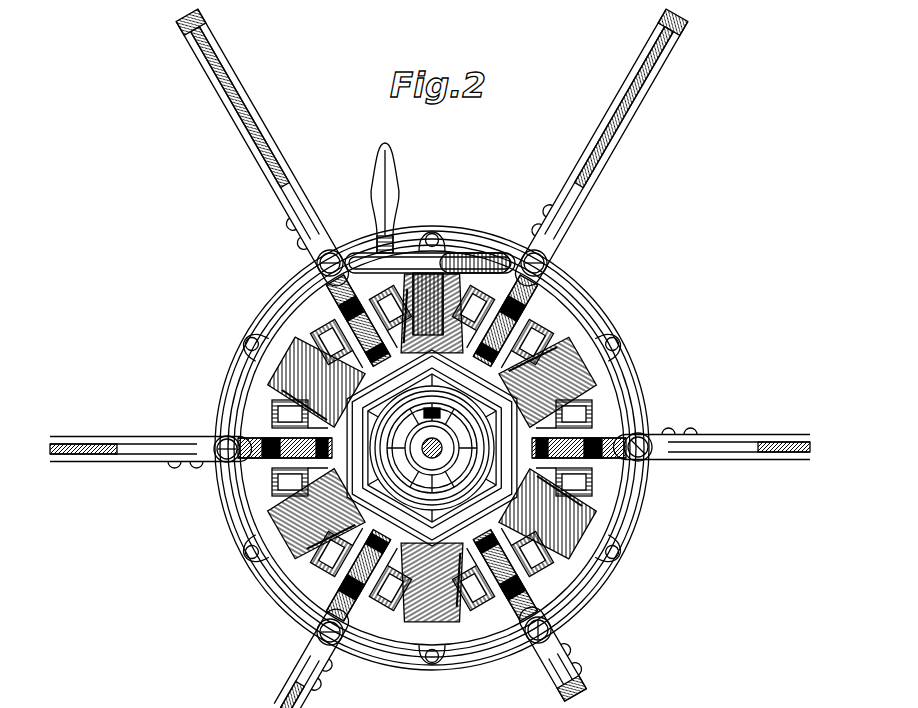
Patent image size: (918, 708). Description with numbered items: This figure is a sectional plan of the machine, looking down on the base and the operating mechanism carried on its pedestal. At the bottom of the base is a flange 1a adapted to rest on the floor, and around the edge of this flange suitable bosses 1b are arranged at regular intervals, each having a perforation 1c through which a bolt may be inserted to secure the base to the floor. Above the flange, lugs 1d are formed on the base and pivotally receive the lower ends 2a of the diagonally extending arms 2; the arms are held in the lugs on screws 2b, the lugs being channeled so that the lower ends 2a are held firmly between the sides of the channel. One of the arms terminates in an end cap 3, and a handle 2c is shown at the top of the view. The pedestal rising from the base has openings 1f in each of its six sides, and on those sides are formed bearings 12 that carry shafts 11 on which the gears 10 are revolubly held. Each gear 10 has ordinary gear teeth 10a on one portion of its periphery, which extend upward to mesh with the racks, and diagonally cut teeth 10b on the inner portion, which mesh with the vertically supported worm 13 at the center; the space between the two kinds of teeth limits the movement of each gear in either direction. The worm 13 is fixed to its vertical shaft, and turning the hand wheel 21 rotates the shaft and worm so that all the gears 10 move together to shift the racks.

The flange 1a is at (630, 490).
The bosses 1b is at (437, 233).
The perforations 1c is at (612, 338).
The lugs 1d is at (552, 270).
The openings 1f is at (310, 352).
The diagonally extending arms 2 is at (288, 196).
The lower ends of the arms 2a is at (330, 252).
The screws 2b is at (548, 262).
The handle 2c is at (404, 339).
The spoke end cap 3 is at (576, 685).
The gears 10 is at (295, 470).
The gear teeth 10a is at (318, 278).
The diagonally cut teeth 10b is at (429, 465).
The shafts 11 is at (405, 300).
The bearings 12 is at (335, 345).
The worm 13 is at (489, 398).
The hand wheel 21 is at (470, 252).